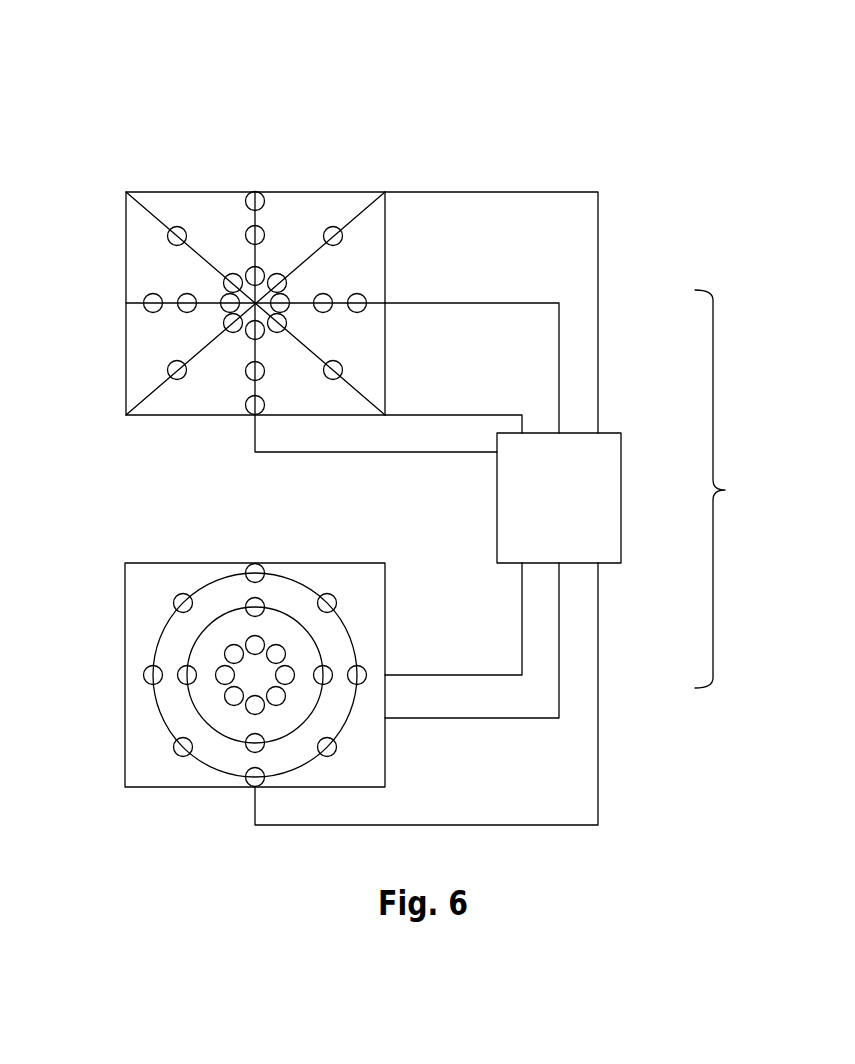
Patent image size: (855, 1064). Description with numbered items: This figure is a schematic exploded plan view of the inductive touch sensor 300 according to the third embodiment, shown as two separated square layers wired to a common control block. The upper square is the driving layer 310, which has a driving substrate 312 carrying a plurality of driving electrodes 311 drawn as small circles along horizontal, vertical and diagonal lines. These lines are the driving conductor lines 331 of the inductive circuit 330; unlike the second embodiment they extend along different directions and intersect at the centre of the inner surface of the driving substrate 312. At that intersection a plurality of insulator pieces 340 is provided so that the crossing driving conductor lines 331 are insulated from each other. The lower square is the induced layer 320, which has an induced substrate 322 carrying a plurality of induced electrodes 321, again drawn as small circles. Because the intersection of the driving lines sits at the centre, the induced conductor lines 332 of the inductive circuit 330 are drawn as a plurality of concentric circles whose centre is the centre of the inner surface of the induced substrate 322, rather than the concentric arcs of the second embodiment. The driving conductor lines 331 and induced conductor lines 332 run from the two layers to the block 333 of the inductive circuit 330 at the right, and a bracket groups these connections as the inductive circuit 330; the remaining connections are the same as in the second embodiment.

The inductive touch sensor 300 is at (105, 60).
The driving layer 310 is at (120, 225).
The driving electrodes 311 is at (182, 232).
The driving substrate 312 is at (312, 205).
The insulator pieces 340 is at (245, 305).
The induced layer 320 is at (118, 593).
The induced electrodes 321 is at (336, 602).
The induced substrate 322 is at (380, 765).
The inductive circuit 330 is at (730, 489).
The driving conductor lines 331 is at (598, 330).
The induced conductor lines 332 is at (598, 722).
The controller 333 is at (597, 500).